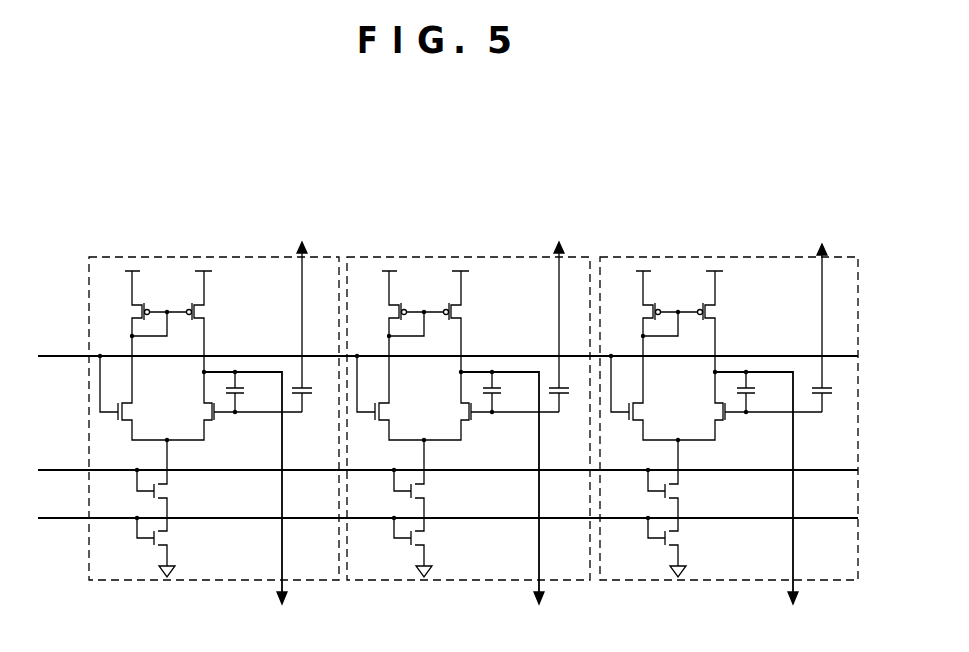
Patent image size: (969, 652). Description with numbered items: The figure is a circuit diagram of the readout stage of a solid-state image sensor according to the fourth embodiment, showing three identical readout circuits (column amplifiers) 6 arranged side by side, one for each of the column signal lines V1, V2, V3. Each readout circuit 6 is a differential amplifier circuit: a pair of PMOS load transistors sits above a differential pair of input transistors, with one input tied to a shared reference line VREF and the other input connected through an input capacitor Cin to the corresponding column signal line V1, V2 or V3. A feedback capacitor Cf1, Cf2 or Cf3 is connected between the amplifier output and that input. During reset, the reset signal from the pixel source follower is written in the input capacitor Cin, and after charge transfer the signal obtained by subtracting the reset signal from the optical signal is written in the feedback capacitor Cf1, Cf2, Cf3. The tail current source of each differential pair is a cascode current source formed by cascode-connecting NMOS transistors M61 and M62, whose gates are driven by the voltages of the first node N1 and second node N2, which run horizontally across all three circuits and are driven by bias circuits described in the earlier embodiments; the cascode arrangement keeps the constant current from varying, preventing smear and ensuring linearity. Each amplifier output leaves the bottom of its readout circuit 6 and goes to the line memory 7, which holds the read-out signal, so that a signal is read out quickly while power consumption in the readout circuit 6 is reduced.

The readout circuit 6 is at (473, 394).
The line memory 7 is at (501, 502).
The NMOS transistor M61 is at (425, 546).
The NMOS transistor M62 is at (425, 476).
The feedback capacitor Cf1 is at (251, 392).
The feedback capacitor Cf2 is at (508, 392).
The feedback capacitor Cf3 is at (762, 392).
The input capacitor Cin is at (571, 400).
The column signal line V1 is at (302, 297).
The column signal line V2 is at (559, 297).
The column signal line V3 is at (822, 299).
The reference voltage line VREF is at (448, 344).
The first node N1 is at (448, 507).
The second node N2 is at (448, 459).